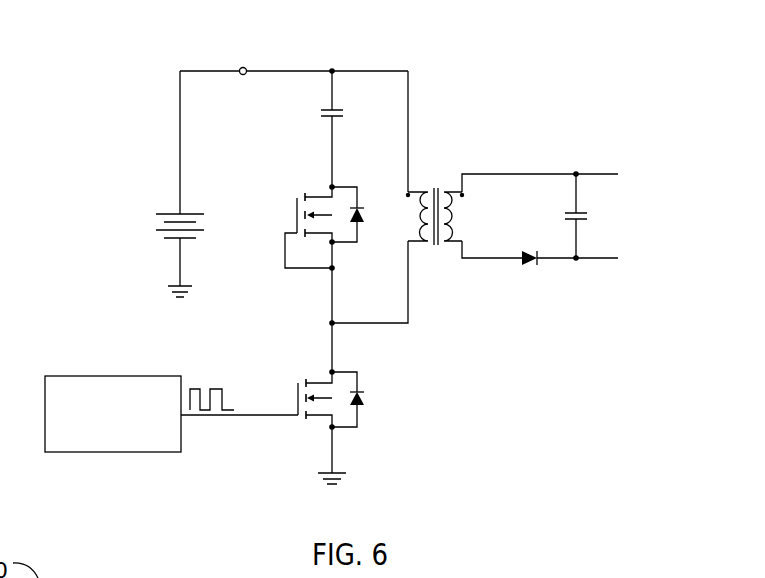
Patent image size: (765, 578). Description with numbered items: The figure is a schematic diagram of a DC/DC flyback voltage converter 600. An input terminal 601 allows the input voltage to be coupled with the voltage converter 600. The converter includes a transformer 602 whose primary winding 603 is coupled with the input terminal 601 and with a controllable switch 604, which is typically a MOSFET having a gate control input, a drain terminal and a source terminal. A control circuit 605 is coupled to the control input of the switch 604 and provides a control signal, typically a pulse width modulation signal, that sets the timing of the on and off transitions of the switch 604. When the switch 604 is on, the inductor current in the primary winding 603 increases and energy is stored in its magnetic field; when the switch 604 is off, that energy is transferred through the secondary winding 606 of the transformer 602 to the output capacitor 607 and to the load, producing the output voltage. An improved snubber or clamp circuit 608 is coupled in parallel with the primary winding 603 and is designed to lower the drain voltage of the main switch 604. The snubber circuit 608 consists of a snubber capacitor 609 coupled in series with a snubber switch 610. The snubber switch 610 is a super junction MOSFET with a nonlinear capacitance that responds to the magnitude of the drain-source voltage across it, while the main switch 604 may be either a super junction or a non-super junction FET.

The voltage converter 600 is at (190, 45).
The input terminal 601 is at (243, 67).
The transformer 602 is at (441, 150).
The primary winding 603 is at (425, 244).
The controllable switch 604 is at (321, 379).
The control circuit 605 is at (113, 375).
The secondary winding 606 is at (451, 244).
The output capacitor 607 is at (583, 214).
The snubber circuit 608 is at (372, 158).
The snubber capacitor 609 is at (326, 118).
The snubber switch 610 is at (318, 196).